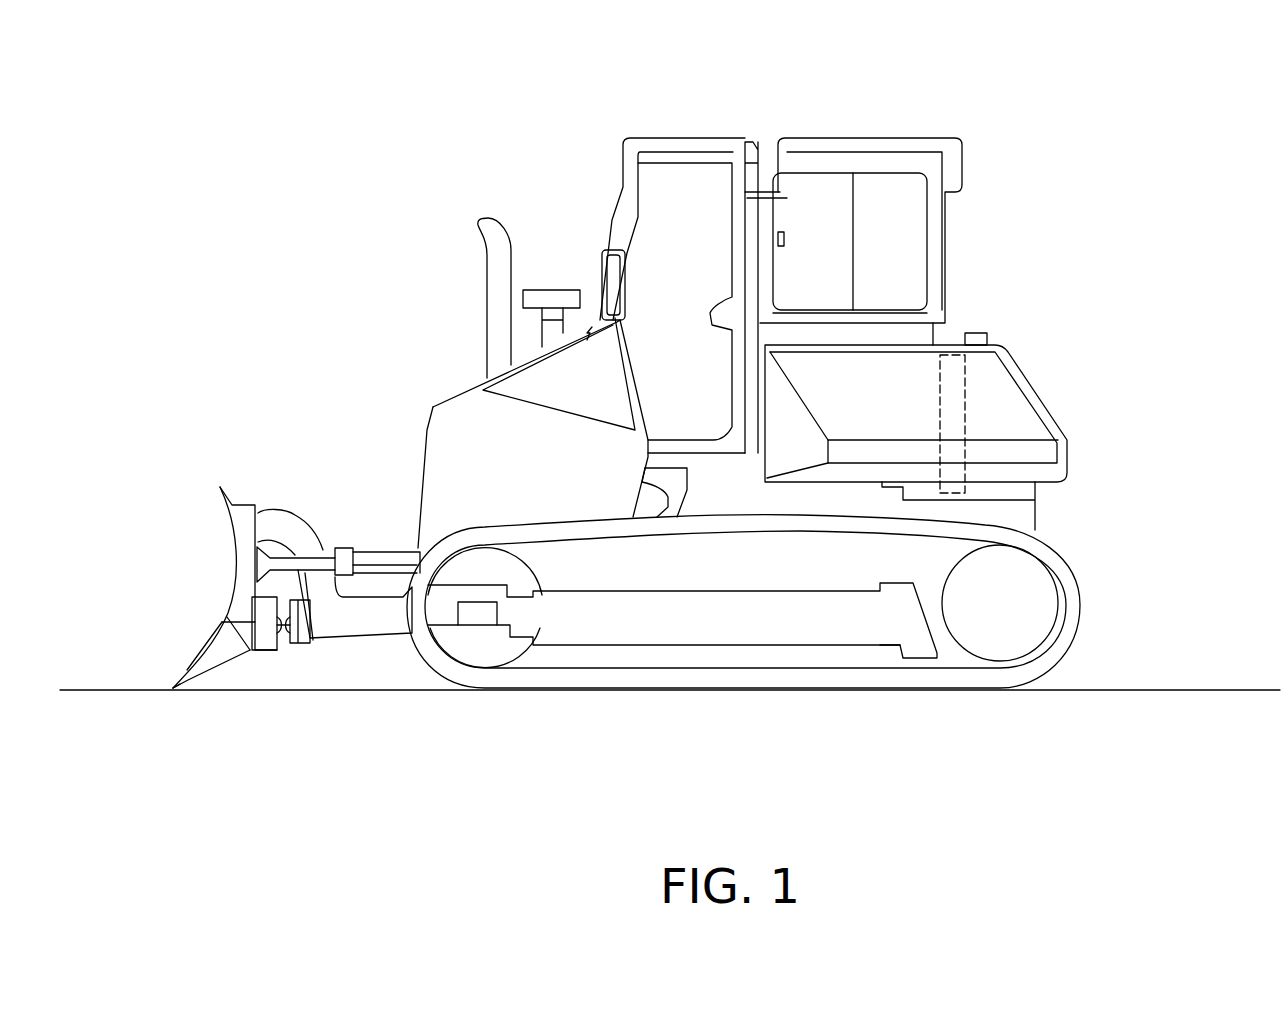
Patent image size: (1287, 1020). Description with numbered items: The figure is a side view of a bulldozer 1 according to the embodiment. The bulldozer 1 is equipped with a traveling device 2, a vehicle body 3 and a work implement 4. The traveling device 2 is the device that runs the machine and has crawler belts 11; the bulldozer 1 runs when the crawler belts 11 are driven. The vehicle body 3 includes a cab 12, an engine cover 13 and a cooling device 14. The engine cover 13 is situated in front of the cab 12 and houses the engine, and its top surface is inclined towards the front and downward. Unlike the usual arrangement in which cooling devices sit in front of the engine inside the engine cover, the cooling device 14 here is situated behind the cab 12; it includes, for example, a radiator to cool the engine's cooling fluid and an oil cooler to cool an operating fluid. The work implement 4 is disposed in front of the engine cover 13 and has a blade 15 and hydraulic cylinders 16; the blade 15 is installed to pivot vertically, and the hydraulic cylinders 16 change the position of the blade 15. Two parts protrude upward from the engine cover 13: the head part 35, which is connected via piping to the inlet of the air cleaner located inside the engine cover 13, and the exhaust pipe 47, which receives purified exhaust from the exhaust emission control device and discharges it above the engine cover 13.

The bulldozer 1 is at (270, 116).
The traveling device 2 is at (1120, 578).
The vehicle body 3 is at (1030, 217).
The work implement 4 is at (190, 428).
The crawler belts 11 is at (1067, 560).
The cab 12 is at (725, 137).
The engine cover 13 is at (453, 406).
The cooling device 14 is at (965, 408).
The blade 15 is at (223, 657).
The hydraulic cylinders 16 is at (375, 562).
The head part 35 is at (563, 290).
The exhaust pipe 47 is at (487, 283).